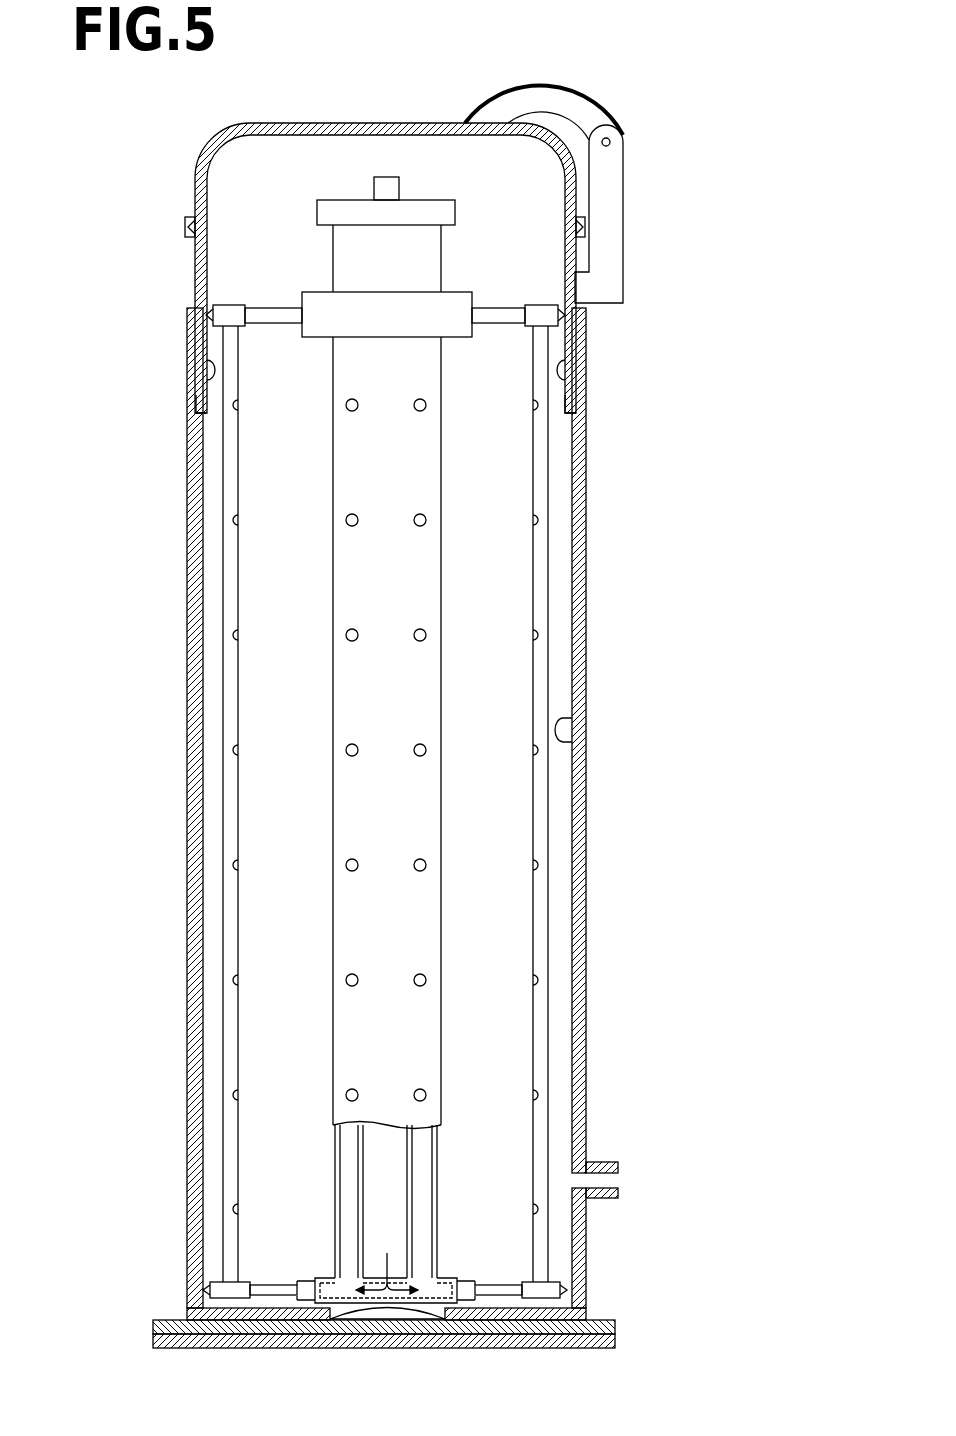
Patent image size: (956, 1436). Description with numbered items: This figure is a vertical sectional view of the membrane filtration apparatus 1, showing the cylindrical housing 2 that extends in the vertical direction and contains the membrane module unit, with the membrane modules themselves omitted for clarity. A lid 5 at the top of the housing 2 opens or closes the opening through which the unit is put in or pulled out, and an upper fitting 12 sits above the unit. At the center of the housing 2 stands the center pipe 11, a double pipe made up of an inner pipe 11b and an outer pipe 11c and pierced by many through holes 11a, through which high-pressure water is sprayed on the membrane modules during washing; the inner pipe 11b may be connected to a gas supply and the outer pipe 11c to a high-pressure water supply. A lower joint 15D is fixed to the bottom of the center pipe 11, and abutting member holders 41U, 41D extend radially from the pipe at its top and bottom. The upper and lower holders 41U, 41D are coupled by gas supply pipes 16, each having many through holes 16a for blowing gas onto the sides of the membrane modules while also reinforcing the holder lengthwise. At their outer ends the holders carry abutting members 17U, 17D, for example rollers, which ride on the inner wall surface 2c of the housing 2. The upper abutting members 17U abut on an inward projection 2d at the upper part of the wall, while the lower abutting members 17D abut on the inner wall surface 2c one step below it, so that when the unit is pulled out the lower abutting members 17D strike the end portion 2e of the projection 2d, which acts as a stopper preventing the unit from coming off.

The fuel cell / hydrogen generating device 1 is at (603, 80).
The housing 2 is at (582, 628).
The inner wall surface 2c is at (572, 740).
The projection 2d is at (203, 380).
The end portion 2e is at (197, 422).
The lid 5 is at (385, 123).
The center pipe 11 is at (445, 520).
The through holes 11a is at (426, 634).
The inner pipe 11b is at (410, 1135).
The outer pipe 11c is at (437, 1160).
The upper connector assembly 12 is at (428, 205).
The lower joint 15D is at (447, 1278).
The gas supply pipes 16 is at (232, 800).
The through holes 16a is at (533, 405).
The upper abutting members 17U is at (197, 318).
The lower abutting members 17D is at (203, 1290).
The upper abutting member holders 41U is at (270, 305).
The lower abutting member holders 41D is at (275, 1285).